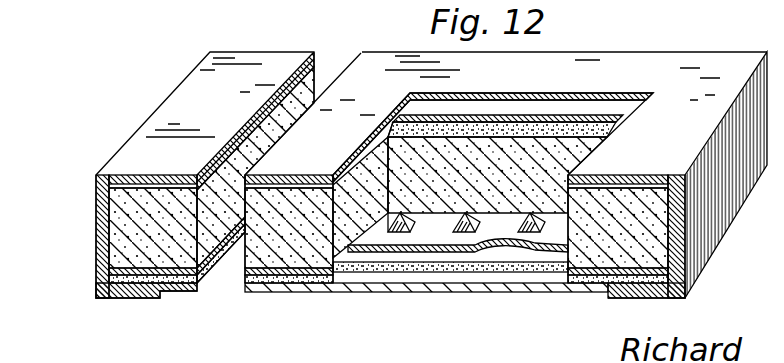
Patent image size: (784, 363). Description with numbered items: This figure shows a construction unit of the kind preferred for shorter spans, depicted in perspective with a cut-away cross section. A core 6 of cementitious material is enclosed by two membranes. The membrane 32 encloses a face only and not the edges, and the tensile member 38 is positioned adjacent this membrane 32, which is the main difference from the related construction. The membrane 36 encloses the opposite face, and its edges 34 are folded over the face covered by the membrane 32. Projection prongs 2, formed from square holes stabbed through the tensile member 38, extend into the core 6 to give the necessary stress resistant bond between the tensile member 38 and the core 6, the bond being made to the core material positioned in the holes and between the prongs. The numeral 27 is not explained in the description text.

The projection prongs 2 is at (403, 223).
The core 6 is at (124, 230).
The adhesive layer 27 is at (178, 287).
The membrane 32 is at (193, 287).
The edges 34 is at (109, 299).
The membrane 36 is at (365, 58).
The tensile member 38 is at (143, 280).